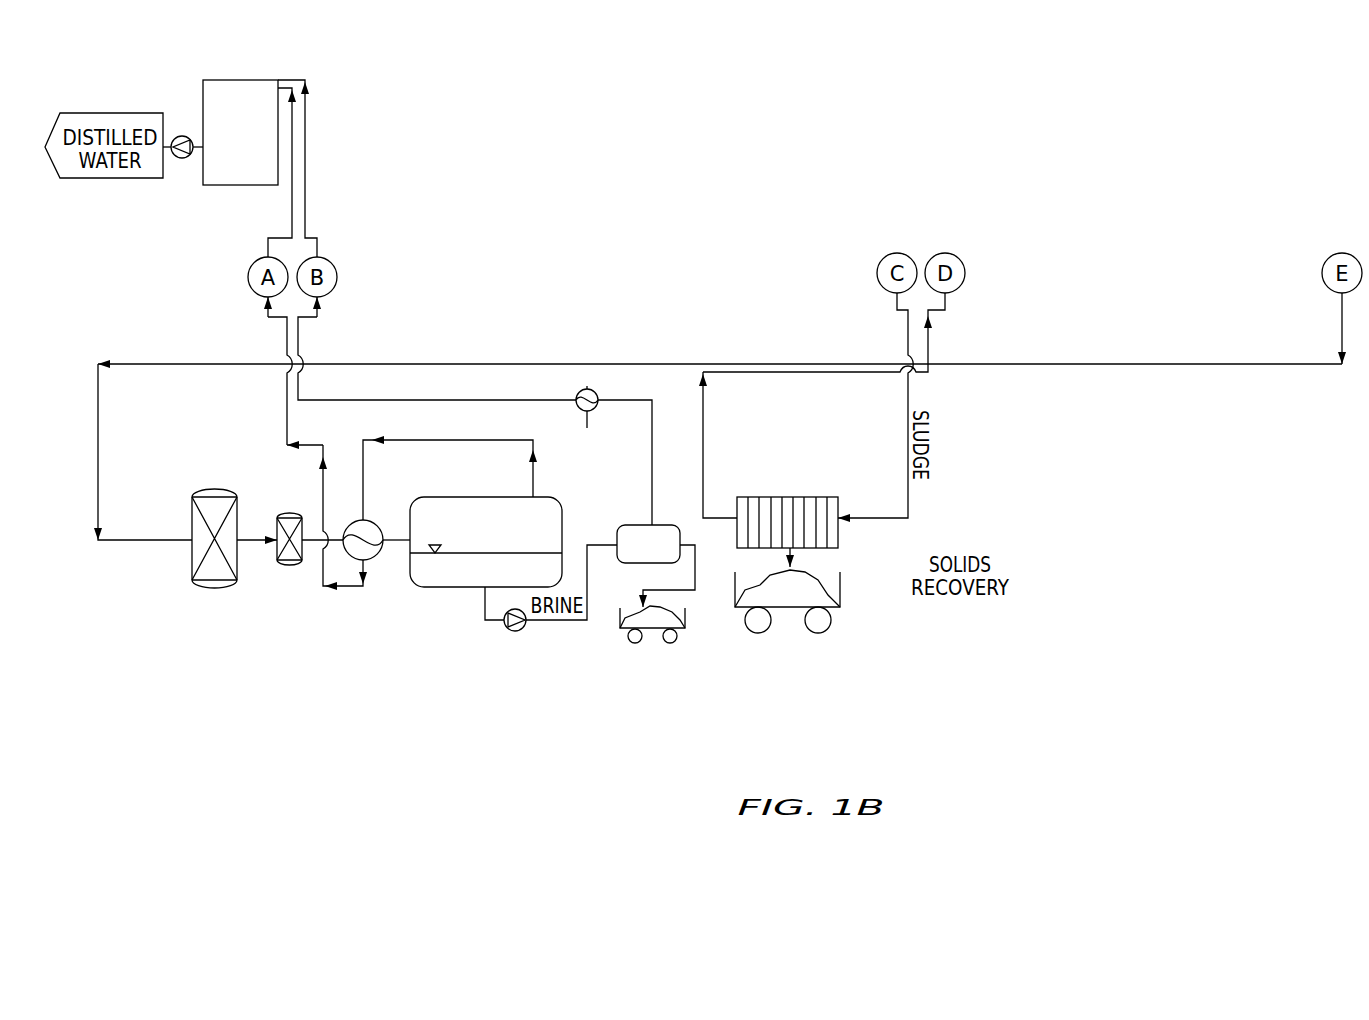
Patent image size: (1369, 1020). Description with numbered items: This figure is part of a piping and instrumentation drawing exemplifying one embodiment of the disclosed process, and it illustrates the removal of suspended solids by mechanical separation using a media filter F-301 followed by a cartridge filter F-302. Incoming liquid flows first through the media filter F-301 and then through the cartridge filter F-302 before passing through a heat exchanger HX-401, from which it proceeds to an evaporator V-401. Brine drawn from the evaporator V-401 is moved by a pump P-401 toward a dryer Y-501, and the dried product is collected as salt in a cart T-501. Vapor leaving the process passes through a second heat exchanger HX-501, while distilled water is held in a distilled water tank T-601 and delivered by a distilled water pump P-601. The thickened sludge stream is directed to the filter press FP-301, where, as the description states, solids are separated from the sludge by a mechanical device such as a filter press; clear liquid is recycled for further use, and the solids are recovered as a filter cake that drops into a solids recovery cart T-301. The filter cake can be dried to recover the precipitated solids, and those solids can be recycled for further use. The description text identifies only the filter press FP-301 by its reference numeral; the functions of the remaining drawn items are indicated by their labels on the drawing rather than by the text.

The distilled water pump P-601 is at (178, 175).
The distilled water tank T-601 is at (241, 135).
The media filter F-301 is at (197, 535).
The cartridge filter F-302 is at (275, 531).
The heat exchanger HX-401 is at (426, 531).
The evaporator V-401 is at (486, 562).
The brine pump P-401 is at (513, 638).
The heat exchanger HX-501 is at (614, 455).
The dryer Y-501 is at (633, 528).
The salt cart T-501 is at (677, 632).
The filter press FP-301 is at (802, 469).
The solids recovery cart T-301 is at (814, 602).